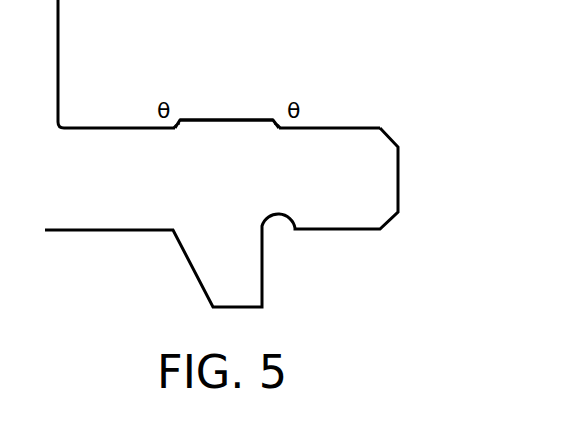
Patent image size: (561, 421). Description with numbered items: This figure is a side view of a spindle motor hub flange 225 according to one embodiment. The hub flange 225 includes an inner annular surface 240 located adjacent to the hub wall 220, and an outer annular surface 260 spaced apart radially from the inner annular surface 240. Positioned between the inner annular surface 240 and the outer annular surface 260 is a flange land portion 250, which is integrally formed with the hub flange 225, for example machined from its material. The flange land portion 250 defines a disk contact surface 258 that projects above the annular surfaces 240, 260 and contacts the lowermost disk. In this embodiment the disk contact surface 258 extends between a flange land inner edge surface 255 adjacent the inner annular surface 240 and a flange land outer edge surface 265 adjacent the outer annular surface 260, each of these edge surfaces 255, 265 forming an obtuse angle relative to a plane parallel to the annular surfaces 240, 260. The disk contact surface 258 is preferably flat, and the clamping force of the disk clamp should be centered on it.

The hub wall 220 is at (60, 27).
The hub flange 225 is at (383, 173).
The inner annular surface 240 is at (110, 126).
The flange land portion 250 is at (237, 126).
The flange land inner edge surface 255 is at (183, 130).
The disk contact surface 258 is at (219, 120).
The outer annular surface 260 is at (338, 126).
The flange land outer edge surface 265 is at (272, 130).